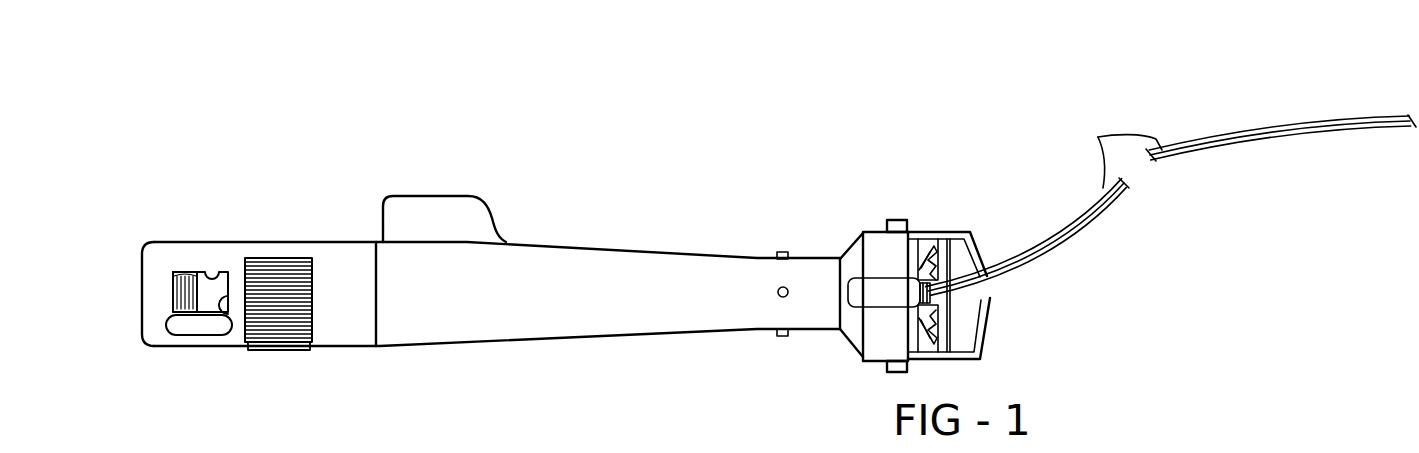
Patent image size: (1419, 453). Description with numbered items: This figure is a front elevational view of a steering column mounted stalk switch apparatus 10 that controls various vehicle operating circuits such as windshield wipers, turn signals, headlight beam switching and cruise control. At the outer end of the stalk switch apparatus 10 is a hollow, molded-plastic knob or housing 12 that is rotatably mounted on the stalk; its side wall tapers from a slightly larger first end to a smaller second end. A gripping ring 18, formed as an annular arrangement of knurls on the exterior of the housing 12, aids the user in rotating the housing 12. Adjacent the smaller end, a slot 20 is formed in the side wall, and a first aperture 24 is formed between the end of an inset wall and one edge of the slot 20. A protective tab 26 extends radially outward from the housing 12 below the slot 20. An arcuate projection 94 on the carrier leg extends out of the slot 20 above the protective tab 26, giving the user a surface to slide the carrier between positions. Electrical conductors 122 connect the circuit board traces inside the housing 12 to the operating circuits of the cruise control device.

The stalk switch apparatus 10 is at (445, 122).
The housing 12 is at (229, 251).
The gripping ring 18 is at (273, 280).
The slot 20 is at (218, 296).
The first aperture 24 is at (211, 276).
The protective tab 26 is at (188, 328).
The arcuate projection 94 is at (178, 302).
The electrical conductors 122 is at (1098, 137).